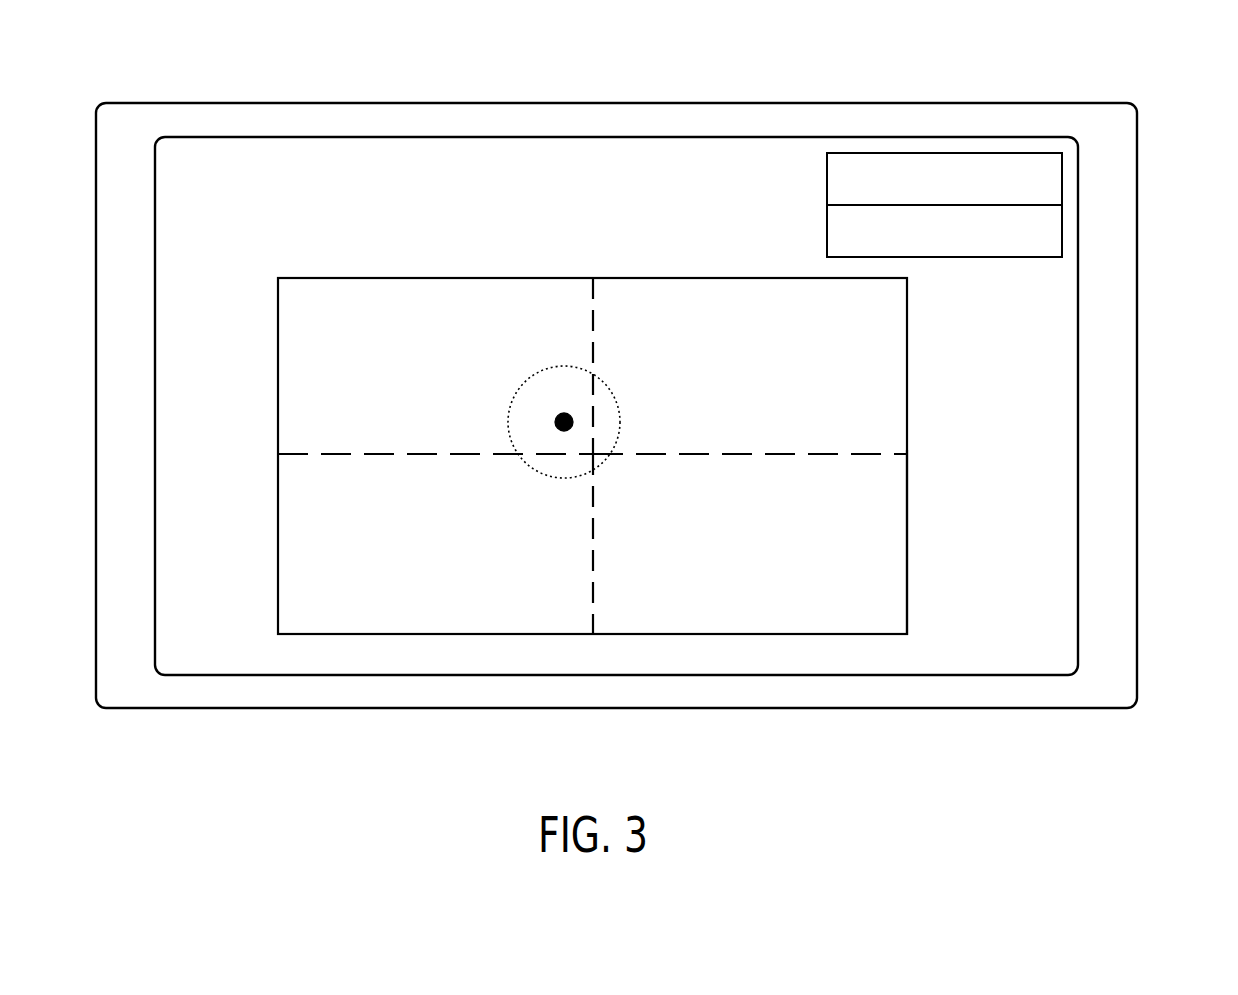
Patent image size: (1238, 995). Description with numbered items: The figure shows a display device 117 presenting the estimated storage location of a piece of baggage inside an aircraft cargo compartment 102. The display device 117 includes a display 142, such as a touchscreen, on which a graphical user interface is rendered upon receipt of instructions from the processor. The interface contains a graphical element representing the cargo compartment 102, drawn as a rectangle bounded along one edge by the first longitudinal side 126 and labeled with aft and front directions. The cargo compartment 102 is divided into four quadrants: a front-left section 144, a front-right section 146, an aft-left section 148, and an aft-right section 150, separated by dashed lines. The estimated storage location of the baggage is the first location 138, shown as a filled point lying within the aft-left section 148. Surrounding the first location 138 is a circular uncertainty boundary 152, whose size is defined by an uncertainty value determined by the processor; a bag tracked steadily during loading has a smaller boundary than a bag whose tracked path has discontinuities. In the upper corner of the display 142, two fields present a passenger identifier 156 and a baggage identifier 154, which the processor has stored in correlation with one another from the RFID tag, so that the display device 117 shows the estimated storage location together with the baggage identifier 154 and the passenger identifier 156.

The display device 117 is at (207, 103).
The display 142 is at (425, 137).
The passenger identifier 156 is at (1042, 177).
The baggage identifier 154 is at (1028, 232).
The first longitudinal side 126 is at (330, 278).
The cargo compartment 102 is at (875, 607).
The aft-left section 148 is at (420, 377).
The front-left section 144 is at (738, 377).
The aft-right section 150 is at (418, 556).
The front-right section 146 is at (738, 554).
The circular uncertainty boundary 152 is at (555, 366).
The first location 138 is at (556, 420).